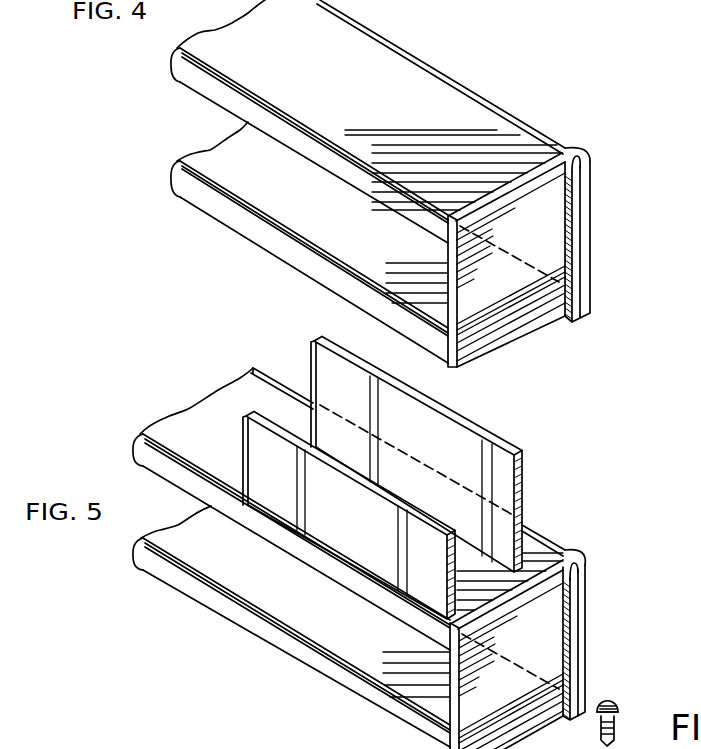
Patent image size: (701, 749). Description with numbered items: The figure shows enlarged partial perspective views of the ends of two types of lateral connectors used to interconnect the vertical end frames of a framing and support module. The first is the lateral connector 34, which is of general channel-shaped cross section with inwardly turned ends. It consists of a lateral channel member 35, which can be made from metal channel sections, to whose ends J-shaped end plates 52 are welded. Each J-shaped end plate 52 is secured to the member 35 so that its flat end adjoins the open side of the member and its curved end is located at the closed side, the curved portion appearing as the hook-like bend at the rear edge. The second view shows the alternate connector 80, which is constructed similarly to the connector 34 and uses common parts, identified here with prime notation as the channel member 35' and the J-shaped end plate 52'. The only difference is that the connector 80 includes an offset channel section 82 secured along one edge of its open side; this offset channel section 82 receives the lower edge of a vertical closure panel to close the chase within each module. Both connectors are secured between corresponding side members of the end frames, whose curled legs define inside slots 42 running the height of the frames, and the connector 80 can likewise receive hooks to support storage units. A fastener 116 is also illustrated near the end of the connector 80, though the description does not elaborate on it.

In FIG. 4, the lateral connector 34 is at (500, 87).
In FIG. 4, the lateral channel member 35 is at (368, 121).
In FIG. 4, the J-shaped end plate 52 is at (539, 257).
In FIG. 5, the alternate connector 80 is at (538, 431).
In FIG. 5, the offset channel section 82 is at (450, 440).
In FIG. 5, the lateral channel member 35' is at (362, 509).
In FIG. 5, the J-shaped end plate 52' is at (542, 649).
In FIG. 5, the screw head 116 is at (617, 716).
In FIG. 5, the inside slot 42 is at (626, 730).